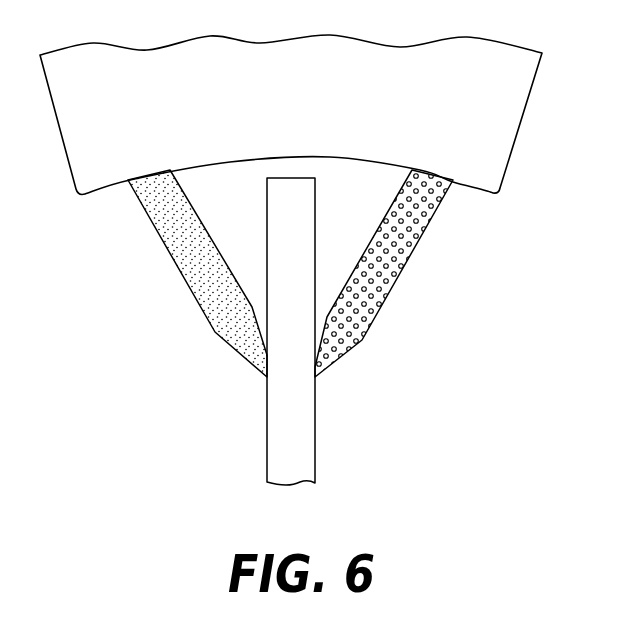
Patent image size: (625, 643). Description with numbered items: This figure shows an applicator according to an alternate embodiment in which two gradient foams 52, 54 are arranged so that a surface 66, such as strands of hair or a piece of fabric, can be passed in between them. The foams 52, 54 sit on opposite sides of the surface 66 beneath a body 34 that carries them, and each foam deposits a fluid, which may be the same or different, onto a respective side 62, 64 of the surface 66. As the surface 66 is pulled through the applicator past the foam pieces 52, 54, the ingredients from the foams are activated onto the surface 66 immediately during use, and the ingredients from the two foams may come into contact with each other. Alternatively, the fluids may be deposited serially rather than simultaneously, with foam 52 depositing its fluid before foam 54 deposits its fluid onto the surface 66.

The pipe wall 34 is at (498, 100).
The gradient foam 52 is at (185, 247).
The gradient foam 54 is at (397, 260).
The side of the surface 62 is at (267, 398).
The side of the surface 64 is at (315, 398).
The surface 66 is at (302, 442).